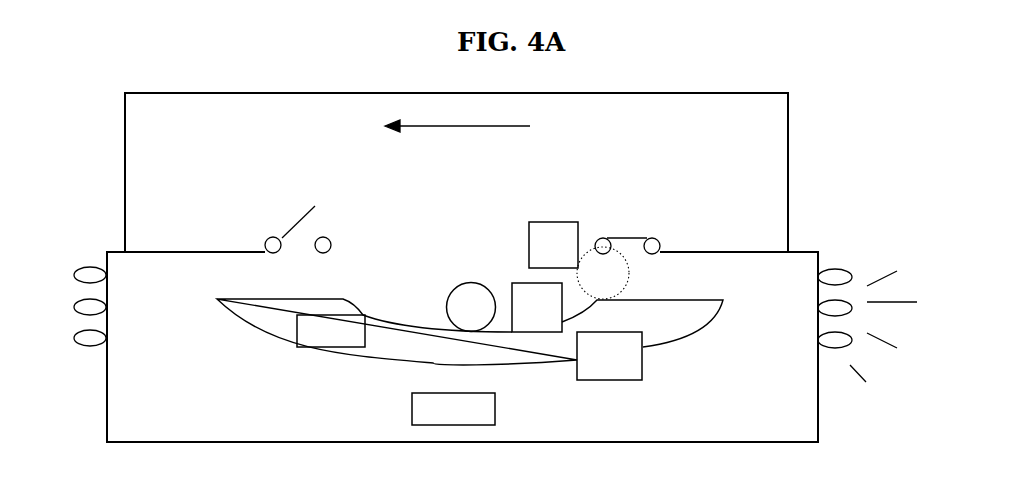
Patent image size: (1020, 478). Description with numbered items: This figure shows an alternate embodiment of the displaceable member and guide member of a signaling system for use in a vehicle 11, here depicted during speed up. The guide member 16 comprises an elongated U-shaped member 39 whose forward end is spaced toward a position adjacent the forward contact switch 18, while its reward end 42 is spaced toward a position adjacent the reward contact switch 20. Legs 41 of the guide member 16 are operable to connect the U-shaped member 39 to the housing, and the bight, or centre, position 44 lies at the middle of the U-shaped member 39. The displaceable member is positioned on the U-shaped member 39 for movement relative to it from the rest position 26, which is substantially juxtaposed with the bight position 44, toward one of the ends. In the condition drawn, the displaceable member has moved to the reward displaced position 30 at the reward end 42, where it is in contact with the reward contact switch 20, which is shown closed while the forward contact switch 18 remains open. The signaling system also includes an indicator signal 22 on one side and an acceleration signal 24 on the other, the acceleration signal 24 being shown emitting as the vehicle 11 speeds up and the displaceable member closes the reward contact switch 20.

The vehicle 11 is at (571, 134).
The guide member 16 is at (331, 331).
The forward contact switch 18 is at (298, 205).
The reward contact switch 20 is at (627, 222).
The indicator signal 22 is at (67, 282).
The acceleration signal 24 is at (852, 270).
The rest position 26 is at (471, 307).
The reward displaced position 30 is at (603, 273).
The U-shaped member 39 is at (537, 307).
The legs 41 is at (609, 356).
The reward end 42 is at (553, 245).
The bight position 44 is at (453, 409).